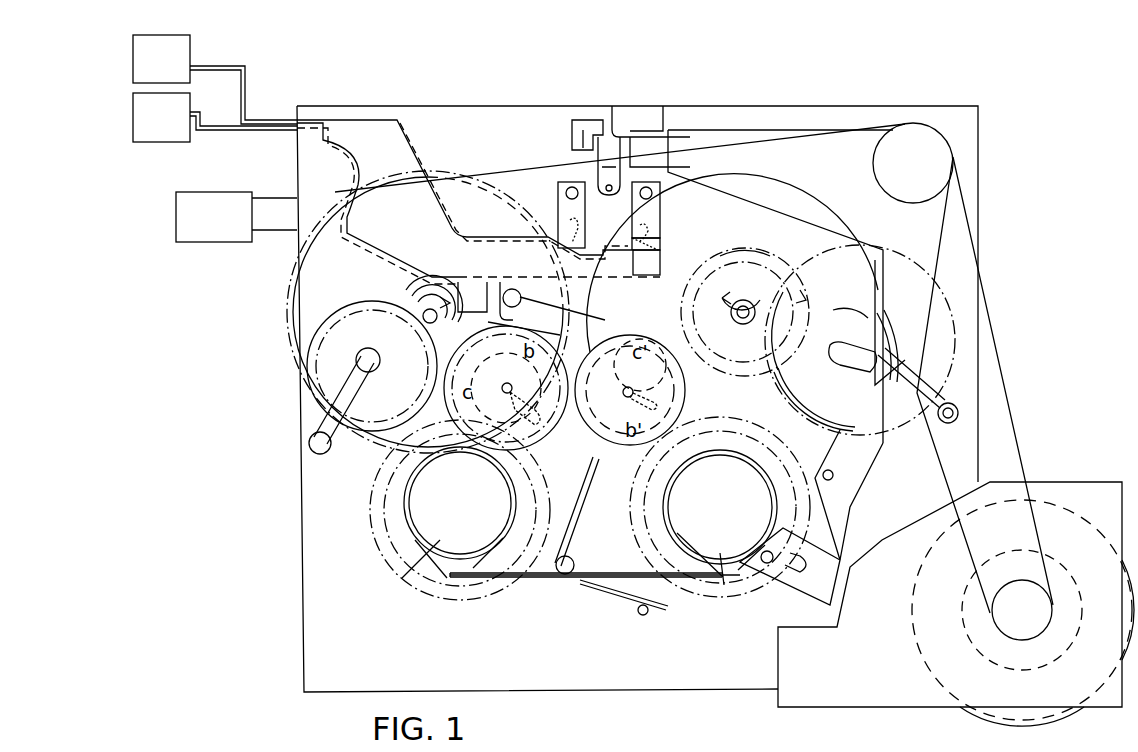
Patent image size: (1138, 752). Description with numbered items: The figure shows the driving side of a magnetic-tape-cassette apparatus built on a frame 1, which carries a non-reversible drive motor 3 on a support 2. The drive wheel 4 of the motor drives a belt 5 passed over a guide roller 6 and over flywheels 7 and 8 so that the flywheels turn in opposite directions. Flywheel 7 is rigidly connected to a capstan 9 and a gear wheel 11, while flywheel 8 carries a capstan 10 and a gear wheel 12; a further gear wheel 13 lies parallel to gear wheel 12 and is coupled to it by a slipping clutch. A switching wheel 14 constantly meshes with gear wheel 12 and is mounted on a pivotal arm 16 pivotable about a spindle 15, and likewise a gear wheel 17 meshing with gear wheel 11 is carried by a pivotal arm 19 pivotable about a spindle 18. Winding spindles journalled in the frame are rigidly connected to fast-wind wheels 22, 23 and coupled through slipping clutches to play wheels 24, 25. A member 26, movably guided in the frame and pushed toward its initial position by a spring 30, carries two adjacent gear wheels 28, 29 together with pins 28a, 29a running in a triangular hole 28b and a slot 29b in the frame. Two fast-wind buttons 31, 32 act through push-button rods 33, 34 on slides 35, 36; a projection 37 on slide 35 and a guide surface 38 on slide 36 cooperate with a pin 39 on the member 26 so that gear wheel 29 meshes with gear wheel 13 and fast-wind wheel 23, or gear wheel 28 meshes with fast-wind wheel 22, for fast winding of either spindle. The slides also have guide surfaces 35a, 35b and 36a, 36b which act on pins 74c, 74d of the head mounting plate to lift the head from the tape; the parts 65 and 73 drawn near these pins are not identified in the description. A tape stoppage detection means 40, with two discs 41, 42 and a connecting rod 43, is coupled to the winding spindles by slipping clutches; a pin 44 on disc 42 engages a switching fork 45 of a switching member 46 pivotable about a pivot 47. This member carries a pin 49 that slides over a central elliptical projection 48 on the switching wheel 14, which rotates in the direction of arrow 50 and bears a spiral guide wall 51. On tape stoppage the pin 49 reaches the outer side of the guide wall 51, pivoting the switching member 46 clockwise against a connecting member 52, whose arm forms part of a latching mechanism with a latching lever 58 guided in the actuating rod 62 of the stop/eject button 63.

The frame 1 is at (540, 688).
The support 2 is at (812, 702).
The drive motor 3 is at (1003, 720).
The drive wheel 4 is at (1035, 625).
The belt 5 is at (1018, 448).
The guide roller 6 is at (945, 165).
The flywheel 7 is at (320, 282).
The flywheel 8 is at (790, 197).
The capstan 9 is at (423, 317).
The capstan 10 is at (735, 310).
The gear wheel 11 is at (420, 300).
The gear wheel 12 is at (735, 292).
The gear wheel 13 is at (739, 245).
The switching wheel 14 is at (925, 372).
The spindle 15 is at (948, 423).
The pivotal arm 16 is at (925, 395).
The gear wheel 17 is at (300, 390).
The spindle 18 is at (312, 450).
The pivotal arm 19 is at (312, 425).
The fast-wind wheel 22 is at (403, 515).
The fast-wind wheel 23 is at (665, 493).
The play wheel 24 is at (380, 555).
The play wheel 25 is at (635, 525).
The member 26 is at (605, 320).
The gear wheel 28 is at (443, 385).
The pin 28a is at (507, 383).
The triangular hole 28b is at (520, 410).
The gear wheel 29 is at (688, 396).
The pin 29a is at (623, 390).
The slot 29b is at (688, 370).
The spring 30 is at (610, 590).
The button 31 is at (135, 58).
The button 32 is at (135, 113).
The push-button rod 33 is at (235, 68).
The push-button rod 34 is at (225, 130).
The slide 35 is at (352, 165).
The guide surface 35a is at (575, 255).
The guide surface 35b is at (635, 270).
The slide 36 is at (425, 165).
The guide surface 36a is at (568, 215).
The guide surface 36b is at (655, 240).
The projection 37 is at (437, 352).
The guide surface 38 is at (437, 340).
The pin 39 is at (525, 297).
The tape stoppage detection means 40 is at (553, 601).
The disc 41 is at (440, 540).
The disc 42 is at (722, 585).
The connecting rod 43 is at (535, 590).
The pin 44 is at (764, 553).
The switching fork 45 is at (800, 590).
The switching member 46 is at (862, 458).
The pivot 47 is at (832, 478).
The projection 48 is at (850, 342).
The pin 49 is at (880, 345).
The arrow 50 is at (800, 280).
The spiral guide wall 51 is at (822, 405).
The connecting member 52 is at (850, 128).
The latching lever 58 is at (650, 108).
The actuating rod 62 is at (276, 232).
The stop/eject button 63 is at (206, 240).
The head 65 is at (609, 196).
The block 73 is at (567, 117).
The pin 74c is at (568, 188).
The pin 74d is at (652, 193).